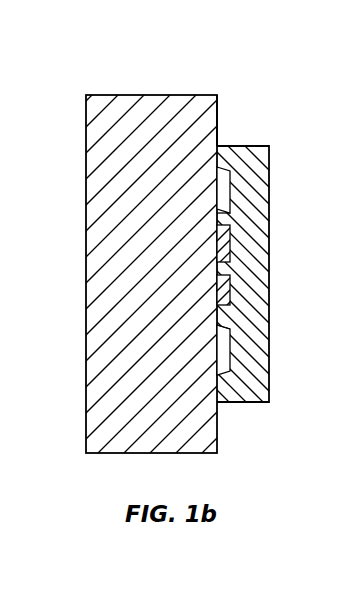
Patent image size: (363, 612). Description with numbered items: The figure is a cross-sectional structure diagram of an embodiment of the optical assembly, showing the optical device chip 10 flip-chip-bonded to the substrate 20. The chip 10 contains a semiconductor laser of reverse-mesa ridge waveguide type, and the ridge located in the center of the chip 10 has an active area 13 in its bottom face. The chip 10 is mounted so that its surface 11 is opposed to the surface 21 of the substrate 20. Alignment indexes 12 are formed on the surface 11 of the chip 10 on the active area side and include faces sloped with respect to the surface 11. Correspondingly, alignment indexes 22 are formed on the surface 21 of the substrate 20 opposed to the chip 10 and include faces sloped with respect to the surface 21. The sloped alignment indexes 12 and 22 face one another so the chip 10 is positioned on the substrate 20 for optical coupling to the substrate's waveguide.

The optical device chip 10 is at (268, 160).
The surface 11 is at (217, 233).
The alignment indexes 12 is at (231, 213).
The active area 13 is at (231, 275).
The substrate 20 is at (160, 95).
The surface 21 is at (217, 118).
The alignment indexes 22 is at (217, 177).